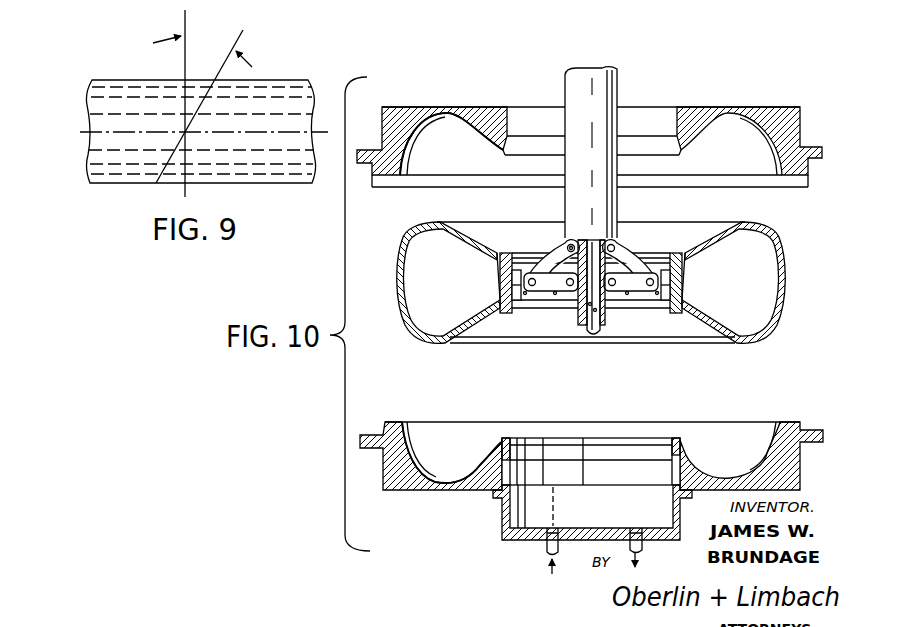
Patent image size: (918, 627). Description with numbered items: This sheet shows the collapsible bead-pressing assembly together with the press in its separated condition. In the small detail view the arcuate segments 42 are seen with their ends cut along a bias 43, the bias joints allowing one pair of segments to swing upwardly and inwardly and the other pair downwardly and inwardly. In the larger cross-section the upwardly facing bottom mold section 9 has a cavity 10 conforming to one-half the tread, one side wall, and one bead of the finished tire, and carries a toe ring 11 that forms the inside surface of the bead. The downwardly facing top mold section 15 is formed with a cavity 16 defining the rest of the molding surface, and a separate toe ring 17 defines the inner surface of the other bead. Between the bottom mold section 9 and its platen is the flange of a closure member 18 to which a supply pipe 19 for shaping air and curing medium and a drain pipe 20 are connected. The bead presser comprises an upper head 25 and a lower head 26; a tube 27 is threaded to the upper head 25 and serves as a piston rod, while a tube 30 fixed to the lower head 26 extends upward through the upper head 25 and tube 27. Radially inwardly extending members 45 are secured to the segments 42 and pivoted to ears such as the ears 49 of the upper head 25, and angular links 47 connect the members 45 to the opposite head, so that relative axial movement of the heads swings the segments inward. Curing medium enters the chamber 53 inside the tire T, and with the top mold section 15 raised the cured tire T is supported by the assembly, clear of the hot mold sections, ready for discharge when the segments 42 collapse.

In FIG. 10, the bottom mold section 9 is at (801, 468).
In FIG. 10, the cavity 10 is at (748, 470).
In FIG. 10, the toe ring 11 is at (660, 440).
In FIG. 10, the top mold section 15 is at (801, 121).
In FIG. 10, the cavity 16 is at (727, 120).
In FIG. 10, the toe ring 17 is at (680, 146).
In FIG. 10, the closure member 18 is at (584, 528).
In FIG. 10, the supply pipe 19 is at (549, 546).
In FIG. 10, the drain pipe 20 is at (627, 545).
In FIG. 10, the upper head 25 is at (609, 212).
In FIG. 10, the lower head 26 is at (609, 318).
In FIG. 10, the tube 27 is at (613, 66).
In FIG. 10, the tube 30 is at (590, 248).
In FIG. 9, the arcuate segments 42 is at (130, 80).
In FIG. 10, the arcuate segments 42 is at (503, 285).
In FIG. 9, the bias 43 is at (190, 117).
In FIG. 10, the radially inwardly extending members 45 is at (565, 288).
In FIG. 10, the angular links 47 is at (556, 268).
In FIG. 10, the ears 49 is at (562, 238).
In FIG. 10, the chamber 53 is at (742, 269).
In FIG. 10, the tire T is at (784, 266).